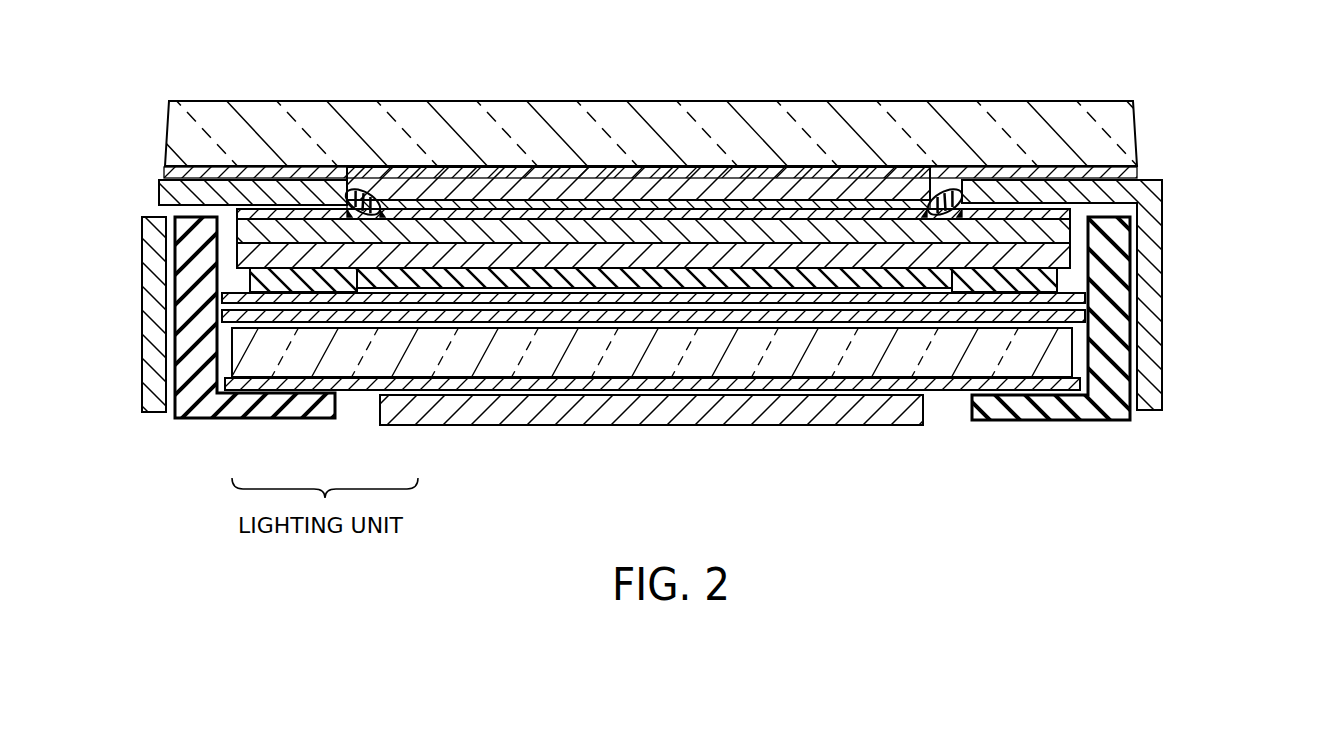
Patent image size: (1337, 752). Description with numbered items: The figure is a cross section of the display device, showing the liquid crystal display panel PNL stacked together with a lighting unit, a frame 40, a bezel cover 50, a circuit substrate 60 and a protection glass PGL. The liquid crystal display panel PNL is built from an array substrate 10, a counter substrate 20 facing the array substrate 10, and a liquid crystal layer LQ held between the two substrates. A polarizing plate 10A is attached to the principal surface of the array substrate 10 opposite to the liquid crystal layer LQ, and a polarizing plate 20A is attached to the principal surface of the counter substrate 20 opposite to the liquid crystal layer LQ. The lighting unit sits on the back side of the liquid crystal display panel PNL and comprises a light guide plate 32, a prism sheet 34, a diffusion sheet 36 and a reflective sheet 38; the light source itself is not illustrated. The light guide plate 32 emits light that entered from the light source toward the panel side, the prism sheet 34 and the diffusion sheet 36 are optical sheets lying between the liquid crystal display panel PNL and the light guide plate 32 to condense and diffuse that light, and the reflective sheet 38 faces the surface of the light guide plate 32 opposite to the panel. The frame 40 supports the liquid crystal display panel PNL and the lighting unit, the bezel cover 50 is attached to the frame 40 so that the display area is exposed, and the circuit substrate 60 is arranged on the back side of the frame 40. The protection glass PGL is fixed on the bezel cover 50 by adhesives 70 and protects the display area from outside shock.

The protection glass PGL is at (812, 124).
The adhesives 70 is at (540, 180).
The polarizing plate 20A is at (900, 205).
The bezel cover 50 is at (142, 291).
The liquid crystal display panel PNL is at (772, 248).
The counter substrate 20 is at (1163, 212).
The liquid crystal layer LQ is at (1062, 231).
The array substrate 10 is at (1062, 258).
The polarizing plate 10A is at (890, 290).
The diffusion sheet 36 is at (275, 303).
The prism sheet 34 is at (305, 322).
The light guide plate 32 is at (400, 362).
The reflective sheet 38 is at (348, 390).
The frame 40 is at (185, 418).
The circuit substrate 60 is at (708, 425).